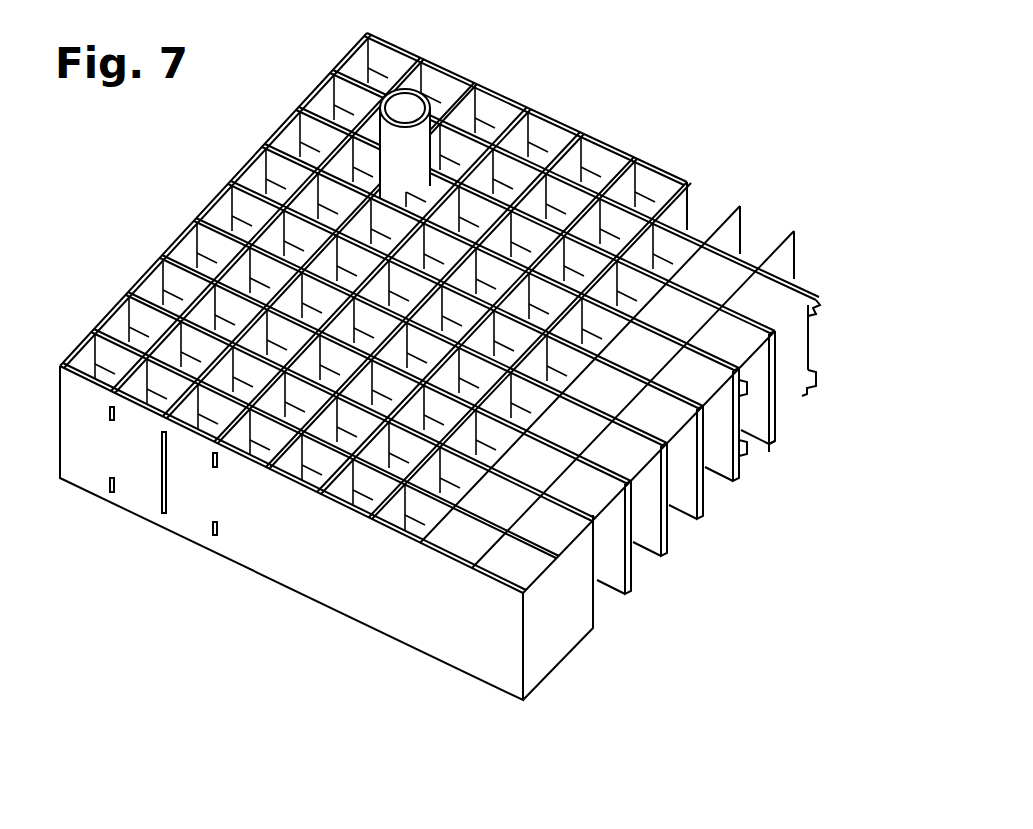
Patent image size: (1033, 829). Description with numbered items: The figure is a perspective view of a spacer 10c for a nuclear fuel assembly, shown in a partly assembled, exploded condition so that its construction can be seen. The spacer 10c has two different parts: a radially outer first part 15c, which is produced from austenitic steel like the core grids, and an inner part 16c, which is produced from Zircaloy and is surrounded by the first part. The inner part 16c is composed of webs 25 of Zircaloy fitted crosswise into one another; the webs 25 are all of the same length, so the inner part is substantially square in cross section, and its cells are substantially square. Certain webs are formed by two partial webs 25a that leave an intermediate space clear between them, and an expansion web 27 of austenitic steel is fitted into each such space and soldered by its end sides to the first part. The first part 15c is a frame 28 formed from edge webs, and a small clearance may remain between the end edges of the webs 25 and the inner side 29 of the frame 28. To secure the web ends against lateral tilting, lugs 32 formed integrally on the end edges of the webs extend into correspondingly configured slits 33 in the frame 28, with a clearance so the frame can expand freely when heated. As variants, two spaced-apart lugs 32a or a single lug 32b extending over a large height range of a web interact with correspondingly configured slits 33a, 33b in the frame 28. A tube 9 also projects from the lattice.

The tube 9 is at (424, 147).
The spacer 10c is at (481, 413).
The first part 15c is at (350, 582).
The inner part 16c is at (481, 350).
The web 25 is at (737, 345).
The partial web 25a is at (777, 300).
The expansion web 27 is at (793, 341).
The frame 28 is at (291, 546).
The inner side 29 is at (430, 80).
The lug 32 is at (817, 313).
The lug 32a is at (752, 463).
The lug 32b is at (785, 448).
The slit 33 is at (112, 493).
The slit 33a is at (216, 536).
The slit 33b is at (165, 472).